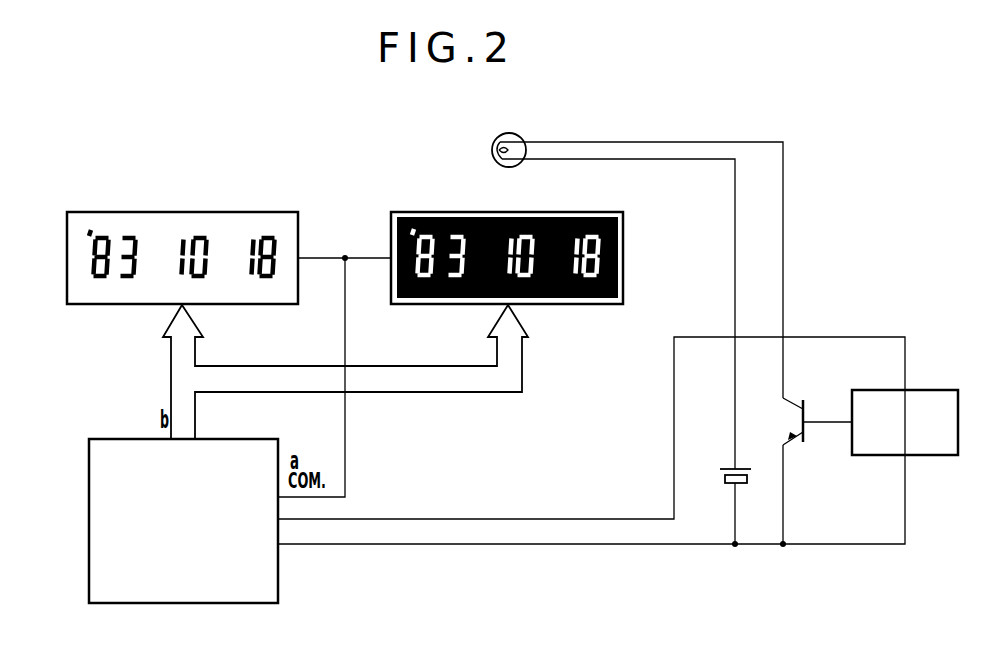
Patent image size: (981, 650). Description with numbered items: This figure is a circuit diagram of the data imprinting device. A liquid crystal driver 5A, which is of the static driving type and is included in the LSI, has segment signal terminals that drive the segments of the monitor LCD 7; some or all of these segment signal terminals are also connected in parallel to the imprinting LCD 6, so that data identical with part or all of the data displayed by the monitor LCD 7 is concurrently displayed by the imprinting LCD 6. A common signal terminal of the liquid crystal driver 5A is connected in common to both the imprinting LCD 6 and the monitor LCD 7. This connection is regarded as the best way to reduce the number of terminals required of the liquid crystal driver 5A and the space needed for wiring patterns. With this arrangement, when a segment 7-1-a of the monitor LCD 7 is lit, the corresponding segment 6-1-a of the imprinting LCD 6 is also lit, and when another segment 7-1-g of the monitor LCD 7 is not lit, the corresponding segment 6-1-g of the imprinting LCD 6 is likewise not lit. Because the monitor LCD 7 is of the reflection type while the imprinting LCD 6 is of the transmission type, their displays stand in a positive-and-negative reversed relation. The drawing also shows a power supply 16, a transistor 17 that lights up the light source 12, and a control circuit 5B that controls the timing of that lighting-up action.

The monitor LCD 7 is at (212, 220).
The segment of the monitor LCD 7-1-a is at (264, 235).
The segment of the monitor LCD 7-1-g is at (279, 257).
The imprinting LCD 6 is at (437, 216).
The segment of the imprinting LCD 6-1-a is at (584, 220).
The segment of the imprinting LCD 6-1-g is at (620, 264).
The light source 12 is at (510, 133).
The liquid crystal driver 5A is at (233, 439).
The control circuit 5B is at (935, 388).
The power supply 16 is at (742, 467).
The transistor 17 is at (803, 398).